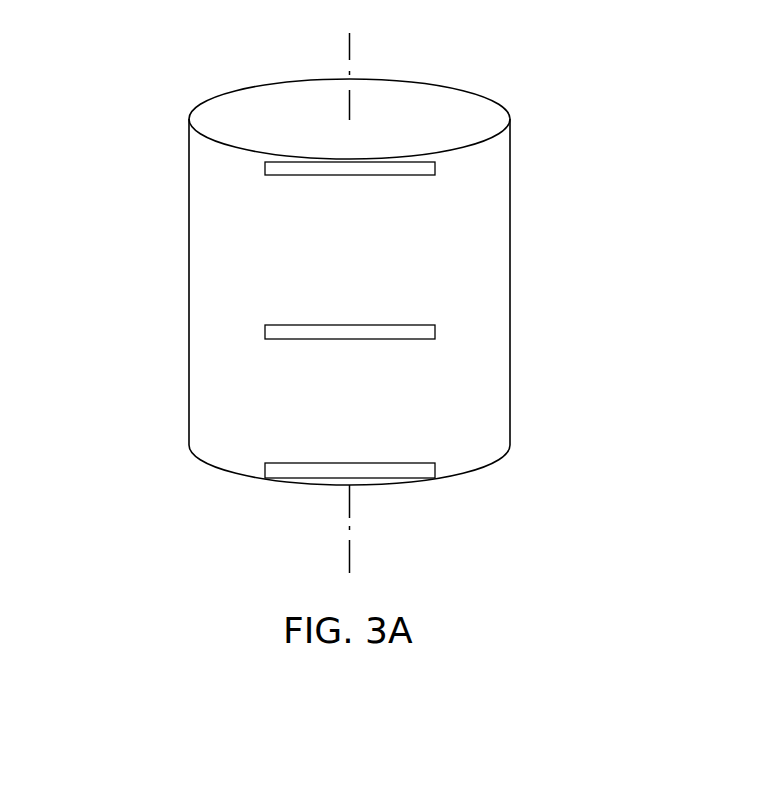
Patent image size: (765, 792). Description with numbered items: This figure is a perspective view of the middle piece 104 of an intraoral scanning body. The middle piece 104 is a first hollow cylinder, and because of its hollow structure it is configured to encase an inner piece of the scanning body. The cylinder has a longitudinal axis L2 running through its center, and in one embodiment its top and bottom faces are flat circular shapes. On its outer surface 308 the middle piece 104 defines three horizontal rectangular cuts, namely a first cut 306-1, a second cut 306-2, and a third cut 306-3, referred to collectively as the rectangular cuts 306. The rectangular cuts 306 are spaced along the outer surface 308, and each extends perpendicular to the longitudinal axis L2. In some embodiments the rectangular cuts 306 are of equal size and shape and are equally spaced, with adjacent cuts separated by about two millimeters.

The middle piece 104 is at (280, 266).
The longitudinal axis L2 is at (350, 53).
The rectangular cuts 306 is at (480, 320).
The first cut 306-1 is at (420, 167).
The second cut 306-2 is at (420, 332).
The third cut 306-3 is at (436, 450).
The outer surface 308 is at (218, 398).